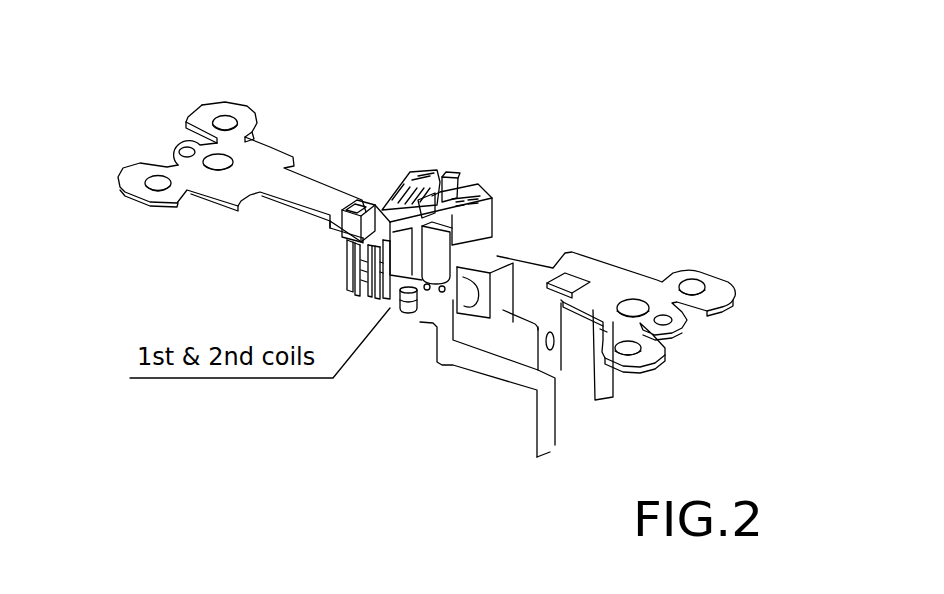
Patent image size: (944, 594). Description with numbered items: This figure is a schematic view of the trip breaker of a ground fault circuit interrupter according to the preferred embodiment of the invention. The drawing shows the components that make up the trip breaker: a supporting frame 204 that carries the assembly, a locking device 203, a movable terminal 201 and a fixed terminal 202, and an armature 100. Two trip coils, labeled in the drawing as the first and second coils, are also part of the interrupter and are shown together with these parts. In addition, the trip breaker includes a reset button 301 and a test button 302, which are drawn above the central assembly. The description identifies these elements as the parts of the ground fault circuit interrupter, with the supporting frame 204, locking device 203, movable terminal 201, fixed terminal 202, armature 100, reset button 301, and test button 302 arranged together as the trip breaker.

The armature 100 is at (507, 295).
The movable terminal 201 is at (408, 307).
The fixed terminal 202 is at (393, 305).
The locking device 203 is at (387, 305).
The supporting frame 204 is at (496, 262).
The reset button 301 is at (413, 167).
The test button 302 is at (463, 190).